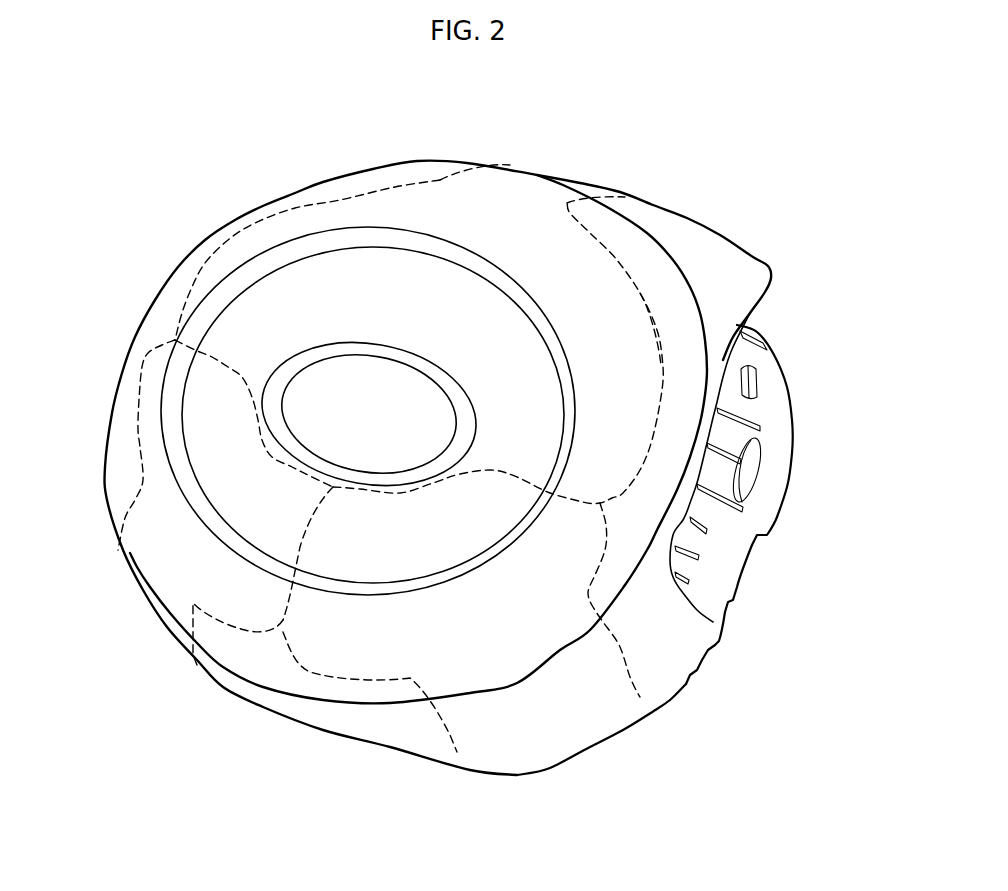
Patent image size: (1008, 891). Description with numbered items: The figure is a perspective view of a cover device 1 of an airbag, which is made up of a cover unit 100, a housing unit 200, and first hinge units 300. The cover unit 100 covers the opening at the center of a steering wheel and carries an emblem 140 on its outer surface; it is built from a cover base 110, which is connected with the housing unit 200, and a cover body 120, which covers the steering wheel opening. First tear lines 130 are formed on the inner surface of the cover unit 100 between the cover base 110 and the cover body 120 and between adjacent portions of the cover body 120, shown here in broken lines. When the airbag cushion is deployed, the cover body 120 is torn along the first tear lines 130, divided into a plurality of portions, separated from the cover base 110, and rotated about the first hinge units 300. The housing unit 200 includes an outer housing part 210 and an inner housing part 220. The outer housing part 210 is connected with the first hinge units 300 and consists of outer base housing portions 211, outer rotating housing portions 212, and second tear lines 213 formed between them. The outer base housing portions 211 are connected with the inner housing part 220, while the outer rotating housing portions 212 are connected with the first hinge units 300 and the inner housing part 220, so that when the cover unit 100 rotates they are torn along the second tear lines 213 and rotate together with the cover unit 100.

The cover device 1 is at (812, 138).
The cover unit 100 is at (560, 255).
The cover base 110 is at (667, 407).
The cover body 120 is at (203, 560).
The first tear lines 130 is at (645, 297).
The emblem 140 is at (290, 355).
The housing unit 200 is at (699, 577).
The outer housing part 210 is at (666, 671).
The outer base housing portions 211 is at (691, 642).
The outer rotating housing portions 212 is at (553, 735).
The second tear lines 213 is at (625, 673).
The inner housing part 220 is at (728, 560).
The first hinge units 300 is at (498, 203).